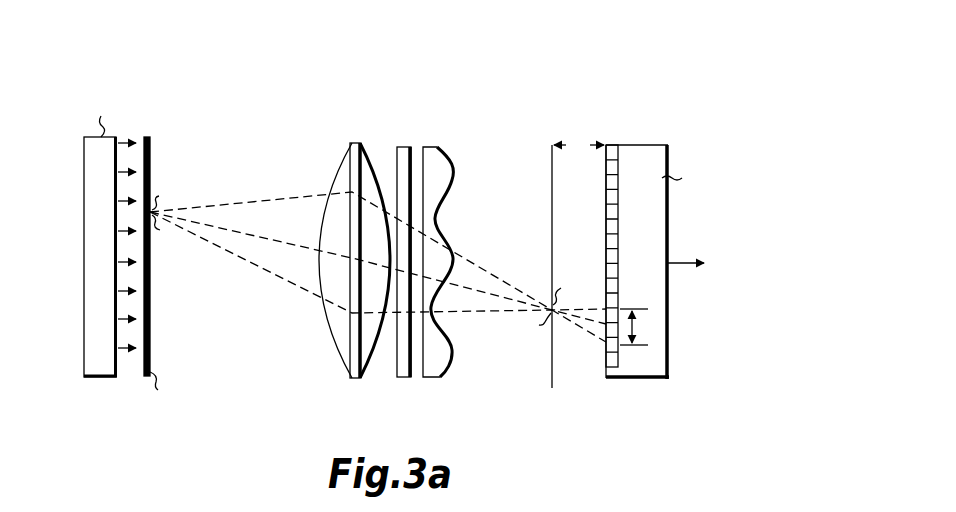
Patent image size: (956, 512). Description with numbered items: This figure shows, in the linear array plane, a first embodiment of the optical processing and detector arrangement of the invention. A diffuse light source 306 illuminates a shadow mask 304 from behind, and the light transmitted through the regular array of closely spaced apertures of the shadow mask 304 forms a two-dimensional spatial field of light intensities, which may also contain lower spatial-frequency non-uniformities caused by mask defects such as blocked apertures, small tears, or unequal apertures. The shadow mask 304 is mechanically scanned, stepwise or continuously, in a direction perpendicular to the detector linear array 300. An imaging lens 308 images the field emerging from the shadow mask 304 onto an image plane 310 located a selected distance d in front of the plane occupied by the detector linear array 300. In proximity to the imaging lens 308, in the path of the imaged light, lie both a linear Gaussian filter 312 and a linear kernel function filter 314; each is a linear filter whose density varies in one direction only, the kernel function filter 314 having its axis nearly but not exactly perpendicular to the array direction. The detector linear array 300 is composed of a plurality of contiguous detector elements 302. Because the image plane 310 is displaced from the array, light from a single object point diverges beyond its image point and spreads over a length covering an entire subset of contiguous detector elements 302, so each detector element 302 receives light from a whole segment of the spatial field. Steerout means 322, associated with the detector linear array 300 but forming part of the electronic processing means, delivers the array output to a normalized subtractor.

The detector linear array 300 is at (688, 249).
The detector elements 302 is at (614, 376).
The shadow mask 304 is at (151, 149).
The diffuse light source 306 is at (84, 269).
The imaging lens 308 is at (336, 176).
The image plane 310 is at (550, 165).
The linear Gaussian filter 312 is at (401, 147).
The kernel function filter 314 is at (441, 368).
The steerout means 322 is at (667, 354).